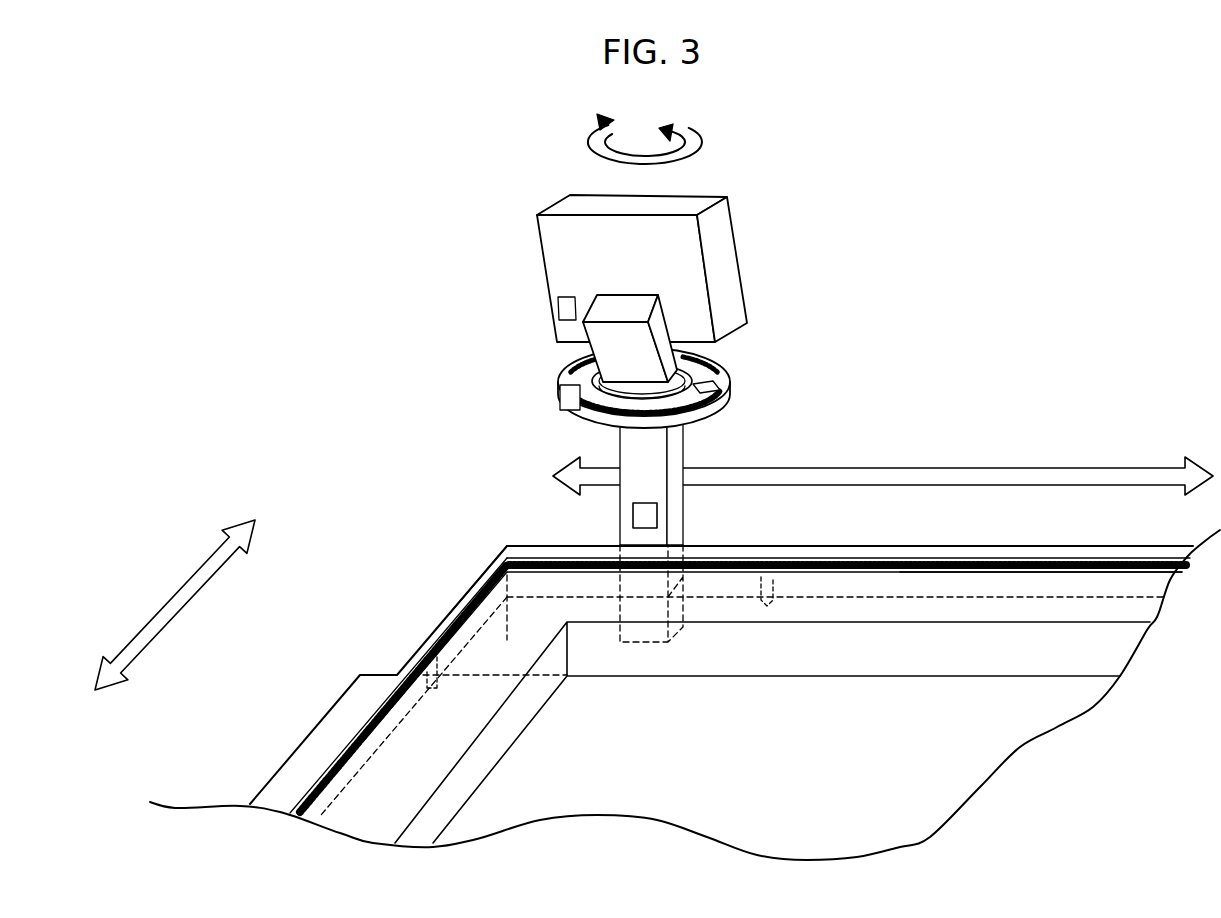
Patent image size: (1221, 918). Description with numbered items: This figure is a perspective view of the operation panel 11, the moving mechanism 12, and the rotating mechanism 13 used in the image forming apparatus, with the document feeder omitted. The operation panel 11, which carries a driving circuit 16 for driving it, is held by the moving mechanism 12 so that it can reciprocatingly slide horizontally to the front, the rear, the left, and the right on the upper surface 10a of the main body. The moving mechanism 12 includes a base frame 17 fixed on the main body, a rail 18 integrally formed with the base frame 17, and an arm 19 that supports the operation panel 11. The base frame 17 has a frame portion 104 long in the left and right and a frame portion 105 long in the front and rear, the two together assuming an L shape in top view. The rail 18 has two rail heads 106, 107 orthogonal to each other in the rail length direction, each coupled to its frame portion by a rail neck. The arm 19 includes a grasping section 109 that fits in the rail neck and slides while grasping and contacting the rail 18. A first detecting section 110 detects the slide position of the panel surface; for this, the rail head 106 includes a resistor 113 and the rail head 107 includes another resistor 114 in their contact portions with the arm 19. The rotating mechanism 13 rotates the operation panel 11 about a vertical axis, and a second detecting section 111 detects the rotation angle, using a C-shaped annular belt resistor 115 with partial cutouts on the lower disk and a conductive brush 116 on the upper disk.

The upper surface 10a is at (270, 797).
The operation panel 11 is at (723, 215).
The moving mechanism 12 is at (1137, 394).
The rotating mechanism 13 is at (715, 358).
The driving circuit 16 is at (557, 312).
The base frame 17 is at (731, 616).
The rail 18 is at (592, 591).
The arm 19 is at (677, 446).
The frame portion 104 is at (940, 545).
The frame portion 105 is at (400, 675).
The rail head 106 is at (773, 577).
The rail head 107 is at (432, 655).
The grasping section 109 is at (703, 616).
The first detecting section 110 is at (633, 513).
The second detecting section 111 is at (725, 388).
The resistor 113 is at (1032, 570).
The resistor 114 is at (488, 585).
The resistor 115 is at (572, 363).
The brush 116 is at (560, 398).